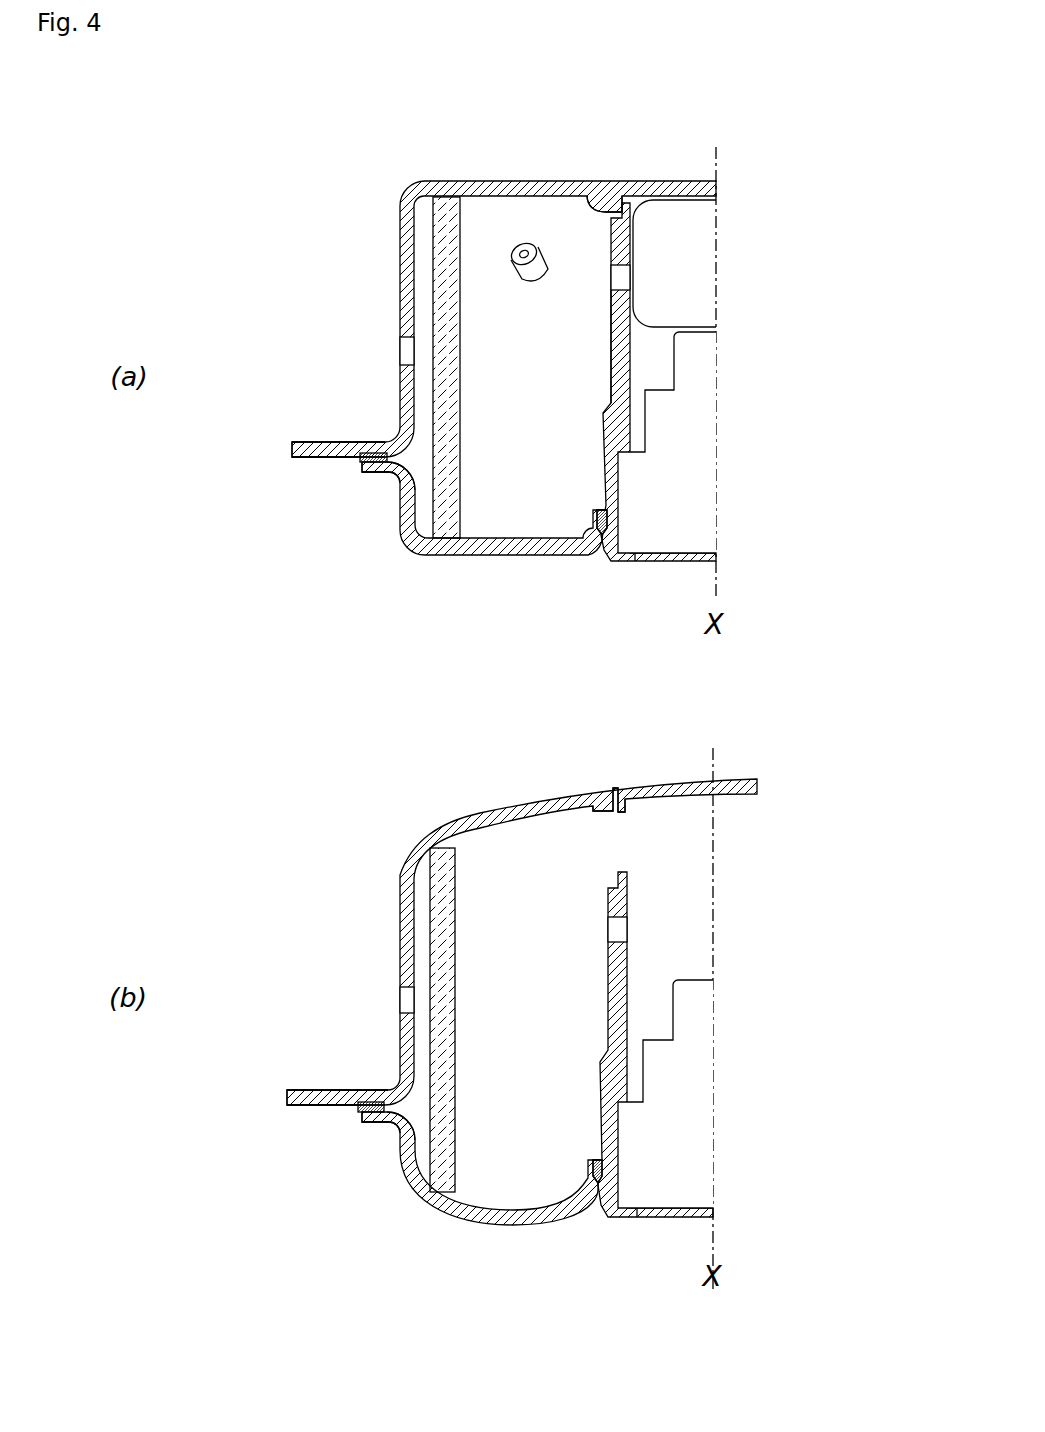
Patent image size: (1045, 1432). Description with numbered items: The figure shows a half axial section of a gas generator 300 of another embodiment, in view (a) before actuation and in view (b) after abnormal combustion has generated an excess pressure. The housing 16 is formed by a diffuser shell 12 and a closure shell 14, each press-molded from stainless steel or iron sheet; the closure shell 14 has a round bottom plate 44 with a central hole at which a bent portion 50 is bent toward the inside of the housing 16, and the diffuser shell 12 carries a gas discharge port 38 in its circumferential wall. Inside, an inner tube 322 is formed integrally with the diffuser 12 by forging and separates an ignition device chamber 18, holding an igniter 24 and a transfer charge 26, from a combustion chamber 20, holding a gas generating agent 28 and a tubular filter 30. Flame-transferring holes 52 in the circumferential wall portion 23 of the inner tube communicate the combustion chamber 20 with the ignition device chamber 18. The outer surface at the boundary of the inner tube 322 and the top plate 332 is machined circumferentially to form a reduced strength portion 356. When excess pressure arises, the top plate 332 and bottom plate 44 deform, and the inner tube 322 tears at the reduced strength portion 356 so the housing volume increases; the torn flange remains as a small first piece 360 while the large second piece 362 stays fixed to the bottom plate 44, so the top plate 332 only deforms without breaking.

The gas generator 300 is at (676, 158).
The top plate 332 is at (521, 181).
The reduced strength portion 356 is at (603, 200).
The first piece 360 is at (621, 790).
The bottom plate 44 is at (493, 556).
The inner tube 322 is at (607, 360).
The second piece 362 is at (604, 1012).
The circumferential wall portion 23 is at (612, 322).
The flame-transferring holes 52 is at (612, 276).
The bent portion 50 is at (597, 518).
The tubular filter 30 is at (450, 348).
The gas discharge port 38 is at (400, 352).
The gas generating agent 28 is at (522, 264).
The transfer charge 26 is at (700, 263).
The igniter 24 is at (700, 415).
The ignition device chamber 18 is at (634, 368).
The combustion chamber 20 is at (479, 453).
The diffuser shell 12 is at (400, 388).
The closure shell 14 is at (400, 508).
The housing 16 is at (206, 398).